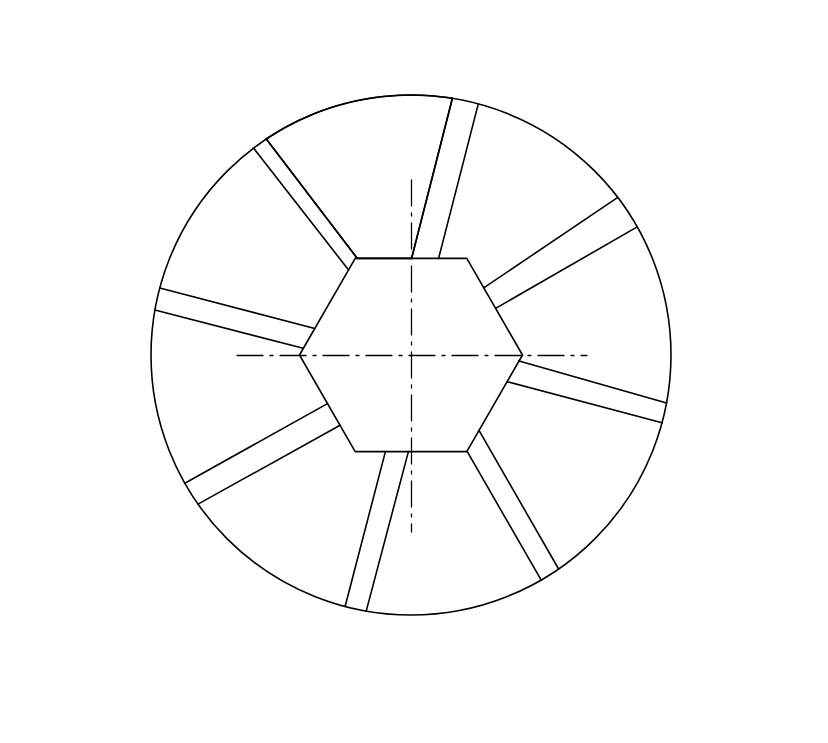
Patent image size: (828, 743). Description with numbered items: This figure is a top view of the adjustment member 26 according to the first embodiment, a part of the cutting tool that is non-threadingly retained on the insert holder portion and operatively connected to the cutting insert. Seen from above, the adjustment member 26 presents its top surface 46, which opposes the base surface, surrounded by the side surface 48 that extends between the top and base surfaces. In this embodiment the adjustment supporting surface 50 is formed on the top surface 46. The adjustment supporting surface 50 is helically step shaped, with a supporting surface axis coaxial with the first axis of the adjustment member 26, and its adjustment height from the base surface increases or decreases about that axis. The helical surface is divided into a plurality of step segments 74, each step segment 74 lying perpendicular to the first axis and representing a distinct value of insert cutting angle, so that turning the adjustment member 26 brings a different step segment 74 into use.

The adjustment member 26 is at (155, 213).
The top surface 46 is at (460, 300).
The side surface 48 is at (151, 380).
The adjustment supporting surface 50 is at (393, 147).
The step segments 74 is at (243, 200).